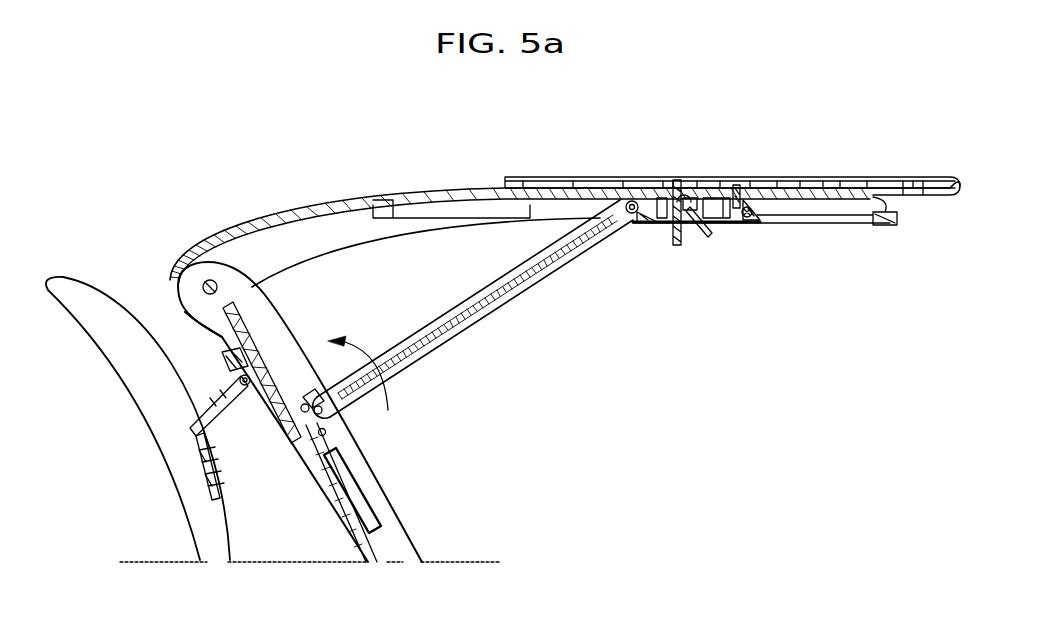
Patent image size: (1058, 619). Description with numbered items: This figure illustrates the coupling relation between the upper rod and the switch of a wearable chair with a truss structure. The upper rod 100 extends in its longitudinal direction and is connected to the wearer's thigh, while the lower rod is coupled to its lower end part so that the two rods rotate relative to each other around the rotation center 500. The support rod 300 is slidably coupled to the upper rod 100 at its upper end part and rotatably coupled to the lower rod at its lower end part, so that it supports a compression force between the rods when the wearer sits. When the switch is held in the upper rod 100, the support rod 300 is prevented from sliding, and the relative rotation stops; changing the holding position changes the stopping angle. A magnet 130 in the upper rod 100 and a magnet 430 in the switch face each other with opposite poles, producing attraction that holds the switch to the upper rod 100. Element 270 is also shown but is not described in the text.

The upper rod 100 is at (363, 198).
The rotation center 500 is at (208, 282).
The support rod 300 is at (510, 296).
The magnet 130 is at (735, 184).
The magnet 430 is at (735, 226).
The screw actuator 270 is at (357, 497).